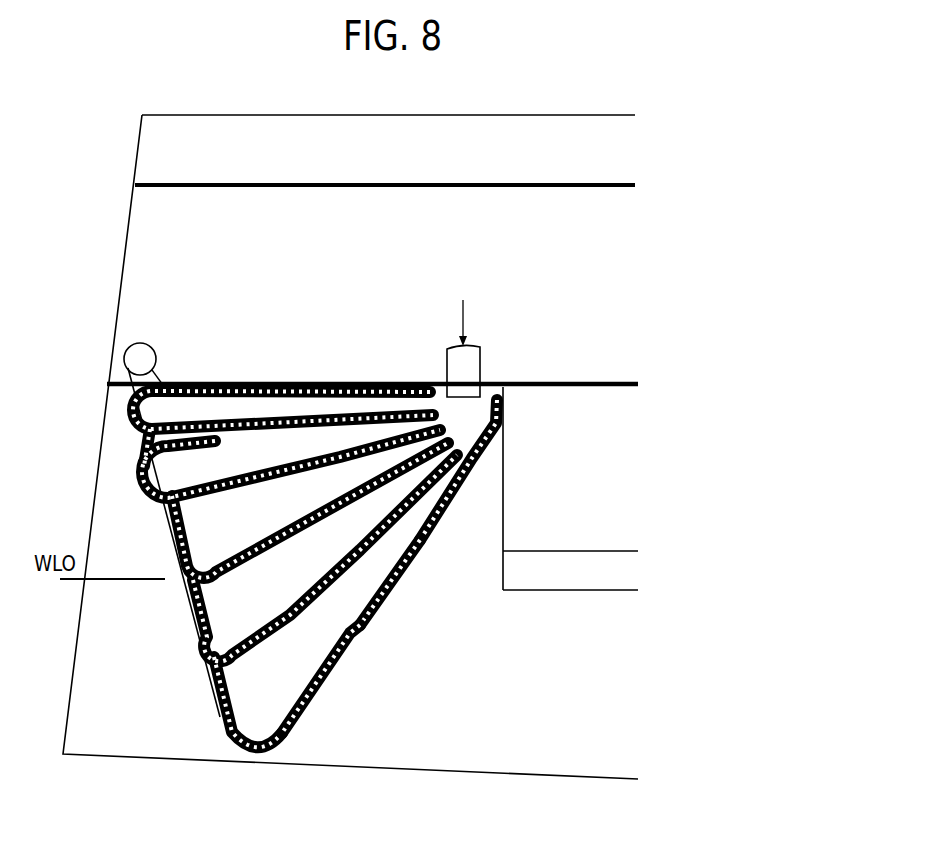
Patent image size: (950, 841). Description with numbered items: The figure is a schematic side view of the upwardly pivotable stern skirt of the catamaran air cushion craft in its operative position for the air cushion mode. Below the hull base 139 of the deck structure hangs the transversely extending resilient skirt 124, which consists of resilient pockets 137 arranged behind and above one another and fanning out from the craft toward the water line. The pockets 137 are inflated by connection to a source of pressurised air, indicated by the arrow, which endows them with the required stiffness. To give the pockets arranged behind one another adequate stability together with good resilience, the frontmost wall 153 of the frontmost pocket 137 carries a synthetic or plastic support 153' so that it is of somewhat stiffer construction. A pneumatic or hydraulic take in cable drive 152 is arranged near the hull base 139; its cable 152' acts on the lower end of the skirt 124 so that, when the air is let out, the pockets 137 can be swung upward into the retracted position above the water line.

The hull base 139 is at (571, 381).
The take in cable drive 152 is at (158, 350).
The cable 152' is at (162, 542).
The resilient pocket 137 is at (178, 462).
The frontmost wall 153 is at (455, 491).
The synthetic or plastic support 153' is at (404, 582).
The resilient skirt 124 is at (369, 633).